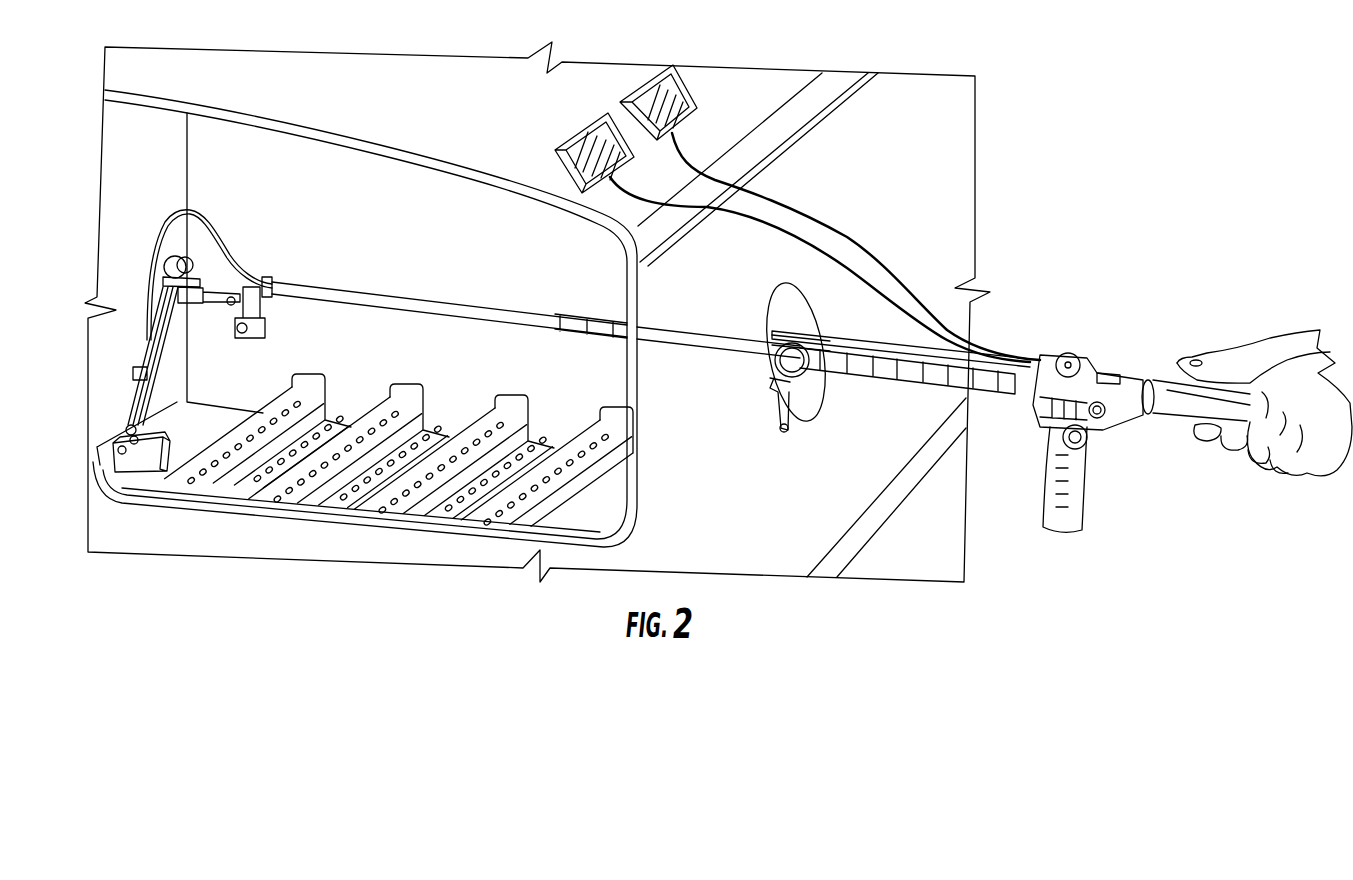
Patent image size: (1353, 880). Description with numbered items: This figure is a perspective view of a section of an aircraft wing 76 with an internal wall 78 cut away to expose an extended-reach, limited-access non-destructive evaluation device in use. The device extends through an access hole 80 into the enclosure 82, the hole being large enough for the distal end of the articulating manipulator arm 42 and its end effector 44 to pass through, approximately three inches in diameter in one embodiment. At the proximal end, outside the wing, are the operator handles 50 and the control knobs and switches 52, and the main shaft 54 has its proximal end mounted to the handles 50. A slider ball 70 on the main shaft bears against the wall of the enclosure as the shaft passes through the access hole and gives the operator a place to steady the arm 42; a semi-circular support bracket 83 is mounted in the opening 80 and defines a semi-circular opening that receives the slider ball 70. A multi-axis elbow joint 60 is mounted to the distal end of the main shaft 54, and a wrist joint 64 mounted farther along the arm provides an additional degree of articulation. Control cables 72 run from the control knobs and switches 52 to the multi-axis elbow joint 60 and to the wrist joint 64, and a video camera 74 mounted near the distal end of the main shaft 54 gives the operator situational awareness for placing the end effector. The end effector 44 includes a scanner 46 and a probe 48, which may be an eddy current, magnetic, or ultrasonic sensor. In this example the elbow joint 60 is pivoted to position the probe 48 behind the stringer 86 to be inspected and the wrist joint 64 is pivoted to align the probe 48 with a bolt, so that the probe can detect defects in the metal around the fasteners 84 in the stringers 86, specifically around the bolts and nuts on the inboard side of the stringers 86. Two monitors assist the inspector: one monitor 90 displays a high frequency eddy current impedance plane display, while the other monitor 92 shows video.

The articulating manipulator arm 42 is at (470, 340).
The end effector 44 is at (162, 432).
The scanner 46 is at (132, 444).
The probe 48 is at (177, 462).
The operator handles 50 is at (1193, 410).
The control knobs and switches 52 is at (1074, 354).
The main shaft 54 is at (933, 385).
The multi-axis elbow joint 60 is at (170, 262).
The wrist joint 64 is at (130, 428).
The slider ball 70 is at (810, 375).
The control cables 72 is at (897, 345).
The video camera 74 is at (265, 333).
The aircraft wing 76 is at (190, 60).
The internal wall 78 is at (380, 528).
The access hole 80 is at (785, 297).
The enclosure 82 is at (405, 160).
The support bracket 83 is at (803, 400).
The fasteners 84 is at (280, 415).
The stringers 86 is at (318, 395).
The monitor 90 is at (580, 132).
The monitor 92 is at (690, 92).